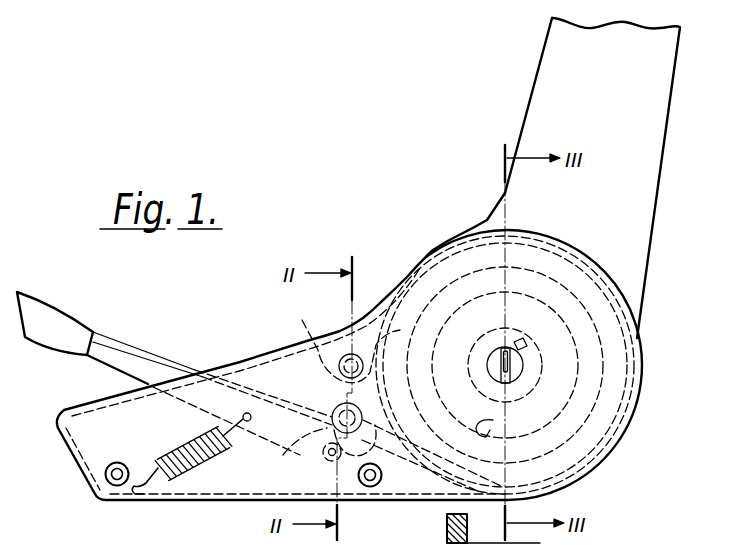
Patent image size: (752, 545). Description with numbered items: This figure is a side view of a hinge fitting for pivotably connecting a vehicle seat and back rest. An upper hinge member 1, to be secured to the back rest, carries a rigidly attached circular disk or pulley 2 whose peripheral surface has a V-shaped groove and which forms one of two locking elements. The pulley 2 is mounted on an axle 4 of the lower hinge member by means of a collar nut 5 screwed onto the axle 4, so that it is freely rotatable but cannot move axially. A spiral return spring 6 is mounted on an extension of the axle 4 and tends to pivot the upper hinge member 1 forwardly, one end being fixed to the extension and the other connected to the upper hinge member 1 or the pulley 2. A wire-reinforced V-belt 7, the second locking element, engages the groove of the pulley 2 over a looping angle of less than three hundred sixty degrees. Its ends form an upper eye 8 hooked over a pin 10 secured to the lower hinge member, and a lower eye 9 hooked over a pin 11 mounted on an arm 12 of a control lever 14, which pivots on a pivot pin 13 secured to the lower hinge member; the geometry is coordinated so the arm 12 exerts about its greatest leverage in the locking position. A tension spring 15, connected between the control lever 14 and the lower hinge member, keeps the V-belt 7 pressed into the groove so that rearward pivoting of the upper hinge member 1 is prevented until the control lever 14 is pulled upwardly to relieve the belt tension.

The upper hinge member 1 is at (547, 83).
The circular disk or pulley 2 is at (593, 395).
The axle 4 is at (515, 368).
The collar nut 5 is at (253, 358).
The spiral return spring 6 is at (522, 347).
The V-belt 7 is at (405, 452).
The upper eye 8 is at (320, 352).
The lower eye 9 is at (297, 443).
The pin 10 is at (341, 338).
The pin 11 is at (330, 406).
The arm 12 is at (369, 488).
The pivot pin 13 is at (323, 453).
The control lever 14 is at (117, 353).
The tension spring 15 is at (200, 472).